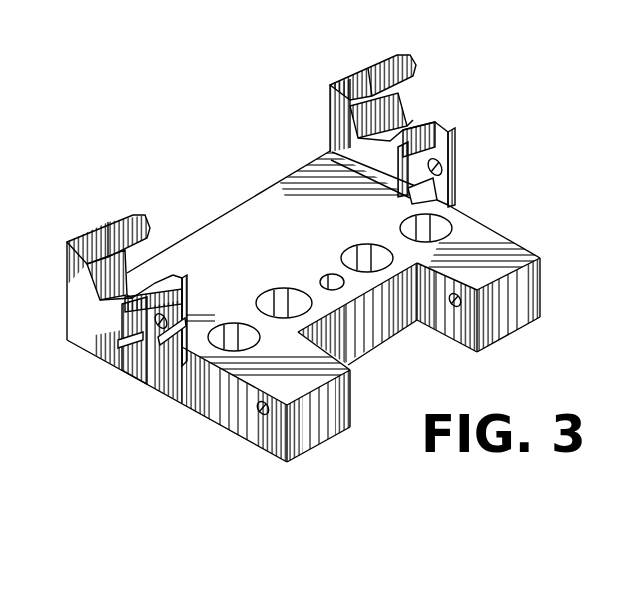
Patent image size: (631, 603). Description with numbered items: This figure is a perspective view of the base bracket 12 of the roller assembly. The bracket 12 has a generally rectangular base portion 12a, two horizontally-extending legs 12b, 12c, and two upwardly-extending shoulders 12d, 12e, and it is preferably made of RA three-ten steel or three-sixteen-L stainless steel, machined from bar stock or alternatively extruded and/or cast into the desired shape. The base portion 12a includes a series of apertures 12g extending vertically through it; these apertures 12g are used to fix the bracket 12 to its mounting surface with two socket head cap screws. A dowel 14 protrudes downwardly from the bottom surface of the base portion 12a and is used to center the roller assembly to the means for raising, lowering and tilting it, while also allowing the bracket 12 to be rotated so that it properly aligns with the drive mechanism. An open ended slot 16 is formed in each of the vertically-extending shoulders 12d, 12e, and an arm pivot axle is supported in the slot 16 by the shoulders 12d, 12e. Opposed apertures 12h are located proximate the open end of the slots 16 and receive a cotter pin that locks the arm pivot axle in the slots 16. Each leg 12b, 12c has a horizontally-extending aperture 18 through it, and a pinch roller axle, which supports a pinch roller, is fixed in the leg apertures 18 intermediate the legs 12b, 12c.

The base bracket 12 is at (497, 403).
The base portion 12a is at (270, 205).
The leg 12b is at (511, 318).
The leg 12c is at (328, 420).
The shoulder 12d is at (450, 140).
The shoulder 12e is at (88, 327).
The apertures 12g is at (438, 222).
The opposed apertures 12h is at (362, 70).
The dowel 14 is at (330, 283).
The open ended slot 16 is at (390, 111).
The leg aperture 18 is at (261, 412).